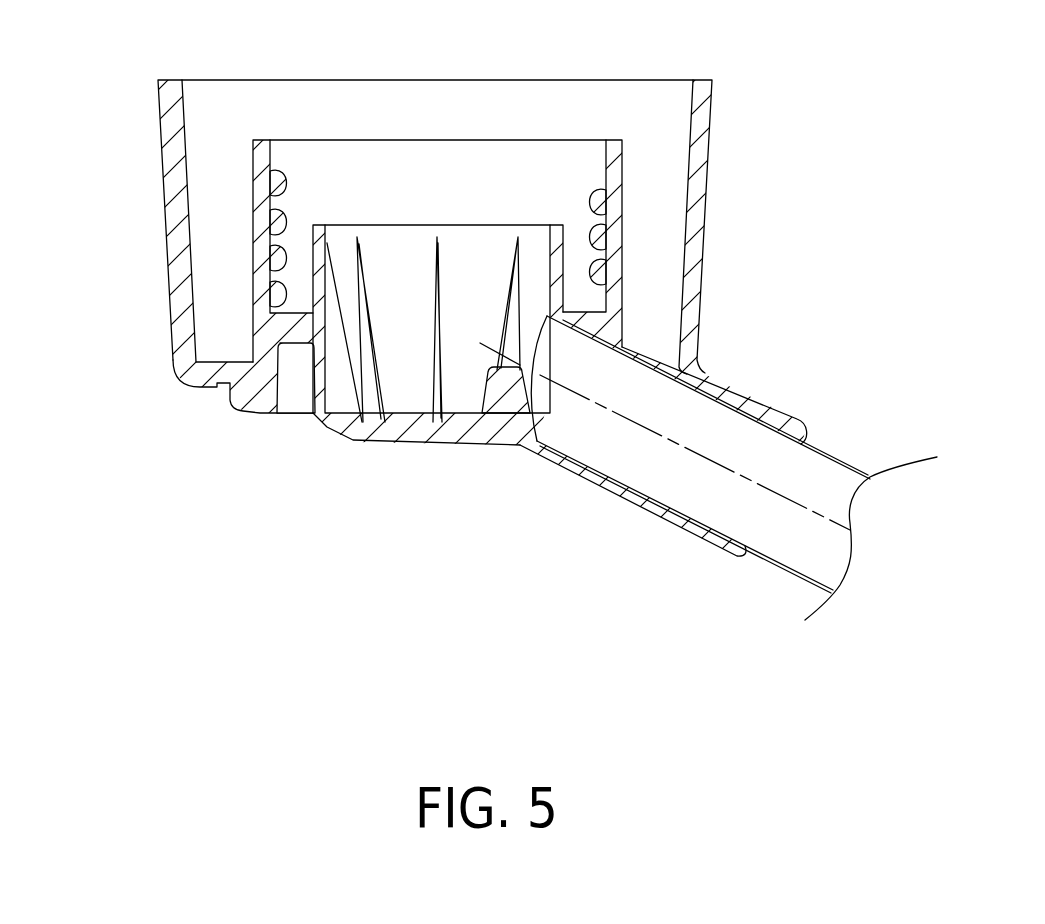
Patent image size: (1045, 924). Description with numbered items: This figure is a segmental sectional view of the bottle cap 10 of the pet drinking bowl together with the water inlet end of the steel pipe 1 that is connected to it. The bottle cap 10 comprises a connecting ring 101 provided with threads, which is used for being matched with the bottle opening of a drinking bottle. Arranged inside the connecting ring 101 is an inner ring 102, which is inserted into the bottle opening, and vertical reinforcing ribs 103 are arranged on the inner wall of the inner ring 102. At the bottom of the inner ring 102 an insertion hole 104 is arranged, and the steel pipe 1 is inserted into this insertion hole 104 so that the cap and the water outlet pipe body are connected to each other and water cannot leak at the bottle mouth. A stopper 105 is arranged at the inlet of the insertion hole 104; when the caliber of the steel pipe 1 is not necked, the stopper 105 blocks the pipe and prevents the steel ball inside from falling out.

The steel pipe 1 is at (838, 457).
The bottle cap 10 is at (165, 222).
The connecting ring 101 is at (287, 263).
The inner ring 102 is at (318, 287).
The vertical reinforcing ribs 103 is at (363, 373).
The insertion hole 104 is at (560, 342).
The stopper 105 is at (503, 392).